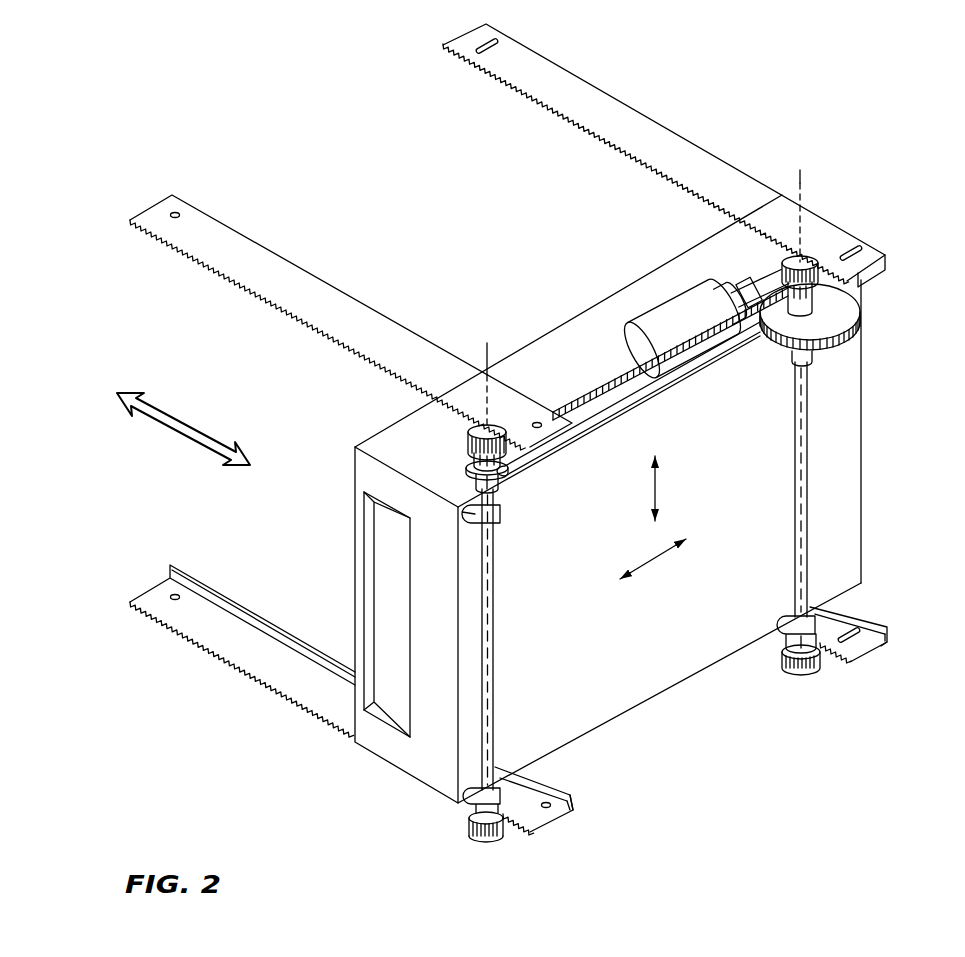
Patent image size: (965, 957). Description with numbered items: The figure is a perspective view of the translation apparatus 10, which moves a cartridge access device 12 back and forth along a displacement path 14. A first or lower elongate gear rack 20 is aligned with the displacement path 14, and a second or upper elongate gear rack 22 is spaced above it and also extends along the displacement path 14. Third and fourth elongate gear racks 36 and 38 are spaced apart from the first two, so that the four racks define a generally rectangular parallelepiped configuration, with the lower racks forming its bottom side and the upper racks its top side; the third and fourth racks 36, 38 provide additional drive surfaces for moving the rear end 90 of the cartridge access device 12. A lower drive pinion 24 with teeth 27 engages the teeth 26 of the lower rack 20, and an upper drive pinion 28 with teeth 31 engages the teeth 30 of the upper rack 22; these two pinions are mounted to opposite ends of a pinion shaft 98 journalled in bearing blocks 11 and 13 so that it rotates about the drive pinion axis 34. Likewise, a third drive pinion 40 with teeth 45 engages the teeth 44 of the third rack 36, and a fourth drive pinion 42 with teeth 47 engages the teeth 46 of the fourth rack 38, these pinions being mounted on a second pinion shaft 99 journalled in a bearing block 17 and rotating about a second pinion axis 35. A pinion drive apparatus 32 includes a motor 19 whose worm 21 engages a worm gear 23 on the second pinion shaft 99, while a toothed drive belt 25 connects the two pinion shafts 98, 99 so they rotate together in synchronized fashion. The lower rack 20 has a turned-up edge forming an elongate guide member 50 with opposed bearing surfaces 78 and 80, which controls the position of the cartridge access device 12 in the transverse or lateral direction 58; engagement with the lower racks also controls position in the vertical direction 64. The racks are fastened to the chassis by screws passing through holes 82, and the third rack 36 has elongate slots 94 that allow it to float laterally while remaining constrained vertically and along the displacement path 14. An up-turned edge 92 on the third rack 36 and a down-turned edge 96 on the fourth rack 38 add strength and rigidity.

The translation apparatus 10 is at (268, 124).
The bearing block 11 is at (466, 803).
The cartridge access device 12 is at (352, 540).
The bearing block 13 is at (502, 517).
The displacement path 14 is at (185, 440).
The bearing block 17 is at (813, 356).
The motor 19 is at (684, 290).
The first or lower elongate gear rack 20 is at (148, 586).
The worm 21 is at (755, 284).
The second or upper elongate gear rack 22 is at (156, 200).
The worm gear 23 is at (861, 340).
The first or lower drive pinion 24 is at (468, 836).
The toothed drive belt 25 is at (696, 380).
The teeth 26 is at (235, 668).
The teeth 27 is at (488, 841).
The second or upper drive pinion 28 is at (468, 434).
The teeth 30 is at (243, 296).
The teeth 31 is at (468, 448).
The pinion drive apparatus 32 is at (645, 304).
The drive pinion axis 34 is at (487, 343).
The second pinion axis 35 is at (803, 177).
The third elongate gear rack 36 is at (858, 672).
The fourth elongate gear rack 38 is at (735, 163).
The third drive pinion 40 is at (781, 660).
The fourth drive pinion 42 is at (810, 255).
The teeth 44 is at (838, 660).
The teeth 45 is at (800, 669).
The teeth 46 is at (490, 76).
The teeth 47 is at (816, 288).
The elongate guide member 50 is at (560, 790).
The transverse or lateral direction 58 is at (661, 560).
The vertical direction 64 is at (660, 493).
The first bearing surface 78 is at (560, 801).
The second bearing surface 80 is at (576, 803).
The holes 82 is at (178, 213).
The rear end 90 is at (866, 440).
The up-turned edge 92 is at (878, 622).
The elongate mounting holes or slots 94 is at (500, 50).
The down-turned edge 96 is at (886, 272).
The pinion shaft 98 is at (496, 660).
The second pinion shaft 99 is at (795, 515).